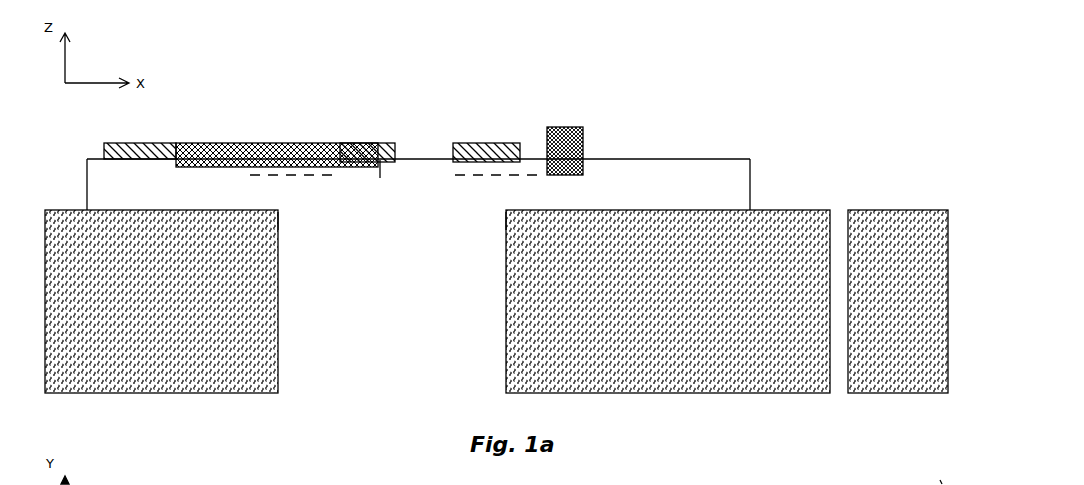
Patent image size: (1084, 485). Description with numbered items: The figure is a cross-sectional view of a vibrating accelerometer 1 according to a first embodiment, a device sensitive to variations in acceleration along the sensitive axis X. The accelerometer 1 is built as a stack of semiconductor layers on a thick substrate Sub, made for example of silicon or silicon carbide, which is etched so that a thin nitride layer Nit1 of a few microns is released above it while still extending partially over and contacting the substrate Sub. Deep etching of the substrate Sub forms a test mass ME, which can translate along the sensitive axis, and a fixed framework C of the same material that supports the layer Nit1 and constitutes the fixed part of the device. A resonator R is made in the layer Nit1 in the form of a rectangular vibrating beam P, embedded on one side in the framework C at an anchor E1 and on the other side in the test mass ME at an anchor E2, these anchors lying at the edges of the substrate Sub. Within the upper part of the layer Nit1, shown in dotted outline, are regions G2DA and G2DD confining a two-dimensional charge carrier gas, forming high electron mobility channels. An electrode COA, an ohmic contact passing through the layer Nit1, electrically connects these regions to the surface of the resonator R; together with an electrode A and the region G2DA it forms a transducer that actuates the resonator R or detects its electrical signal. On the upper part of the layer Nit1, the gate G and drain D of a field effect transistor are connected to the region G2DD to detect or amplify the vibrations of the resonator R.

The vibrating accelerometer 1 is at (875, 108).
The gate G is at (171, 143).
The drain D is at (227, 143).
The two-dimensional charge carrier gas region G2DD is at (347, 143).
The resonator R is at (388, 143).
The two-dimensional charge carrier gas region G2DA is at (466, 143).
The electrode A is at (500, 143).
The electrode COA is at (578, 127).
The vibrating beam P is at (670, 159).
The nitride layer Nit1 is at (718, 173).
The anchor E1 is at (283, 222).
The anchor E2 is at (485, 218).
The substrate Sub is at (250, 385).
The test mass ME is at (700, 305).
The fixed framework C is at (920, 325).